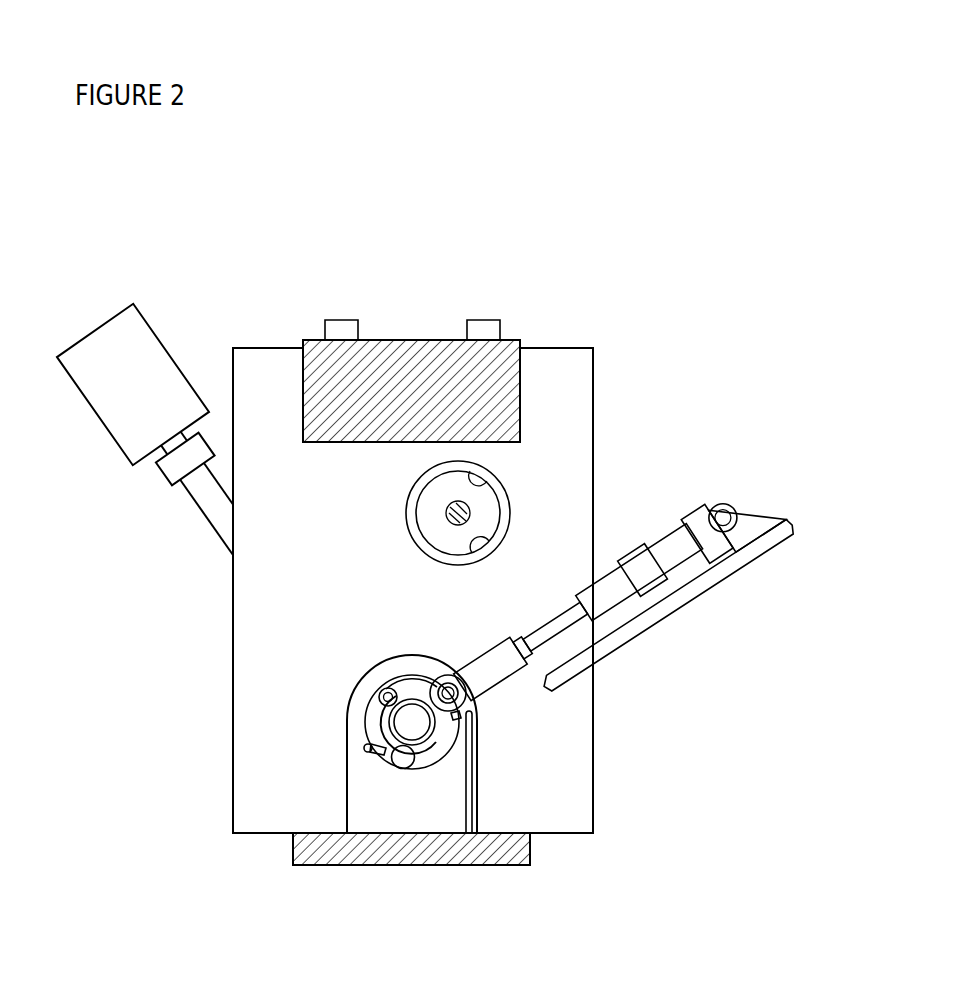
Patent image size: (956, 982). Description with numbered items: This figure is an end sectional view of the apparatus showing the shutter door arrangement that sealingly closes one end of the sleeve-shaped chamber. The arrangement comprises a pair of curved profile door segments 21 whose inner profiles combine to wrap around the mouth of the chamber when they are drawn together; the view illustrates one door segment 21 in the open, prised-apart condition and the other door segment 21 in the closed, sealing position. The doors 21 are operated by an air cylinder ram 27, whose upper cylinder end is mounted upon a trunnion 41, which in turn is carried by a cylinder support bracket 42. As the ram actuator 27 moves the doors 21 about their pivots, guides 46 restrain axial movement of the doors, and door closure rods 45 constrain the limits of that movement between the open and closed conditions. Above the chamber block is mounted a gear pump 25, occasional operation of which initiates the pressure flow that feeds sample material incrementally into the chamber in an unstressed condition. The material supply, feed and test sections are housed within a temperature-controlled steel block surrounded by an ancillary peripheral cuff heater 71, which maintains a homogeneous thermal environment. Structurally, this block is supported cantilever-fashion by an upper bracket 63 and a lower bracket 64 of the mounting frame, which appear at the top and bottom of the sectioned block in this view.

The curved profile door segments 21 is at (408, 692).
The gear pump 25 is at (485, 500).
The air cylinder ram 27 is at (628, 562).
The trunnion 41 is at (747, 522).
The cylinder support bracket 42 is at (702, 585).
The door closure rods 45 is at (366, 750).
The guides 46 is at (405, 758).
The upper bracket 63 is at (398, 352).
The lower bracket 64 is at (460, 852).
The cuff heater 71 is at (557, 368).